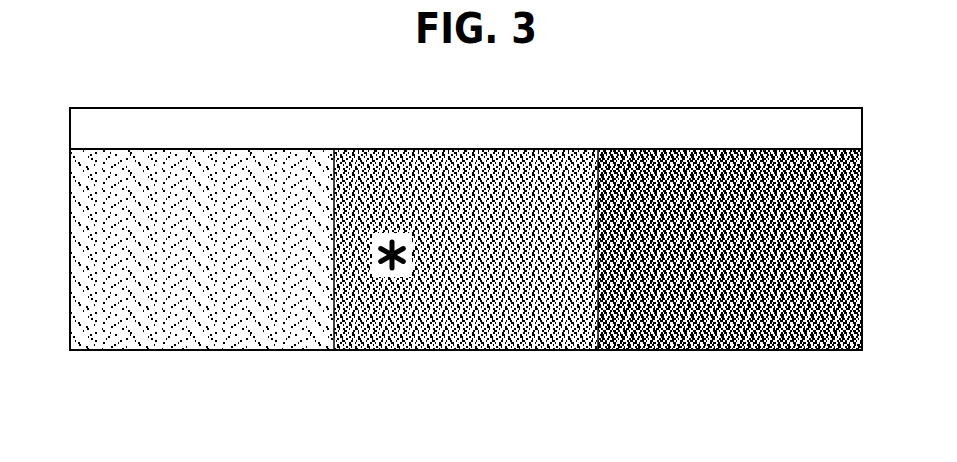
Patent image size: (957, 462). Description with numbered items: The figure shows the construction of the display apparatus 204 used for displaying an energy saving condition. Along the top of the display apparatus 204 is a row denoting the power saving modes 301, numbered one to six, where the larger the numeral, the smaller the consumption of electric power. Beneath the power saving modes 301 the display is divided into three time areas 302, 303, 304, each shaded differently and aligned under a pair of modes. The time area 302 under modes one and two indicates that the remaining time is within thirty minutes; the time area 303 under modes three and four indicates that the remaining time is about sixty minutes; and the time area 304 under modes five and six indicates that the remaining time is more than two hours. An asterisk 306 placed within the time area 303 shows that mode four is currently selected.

The display apparatus 204 is at (313, 91).
The power saving modes 301 is at (455, 113).
The time area 302 is at (713, 336).
The time area 303 is at (540, 335).
The time area 304 is at (188, 337).
The asterisk 306 is at (392, 270).